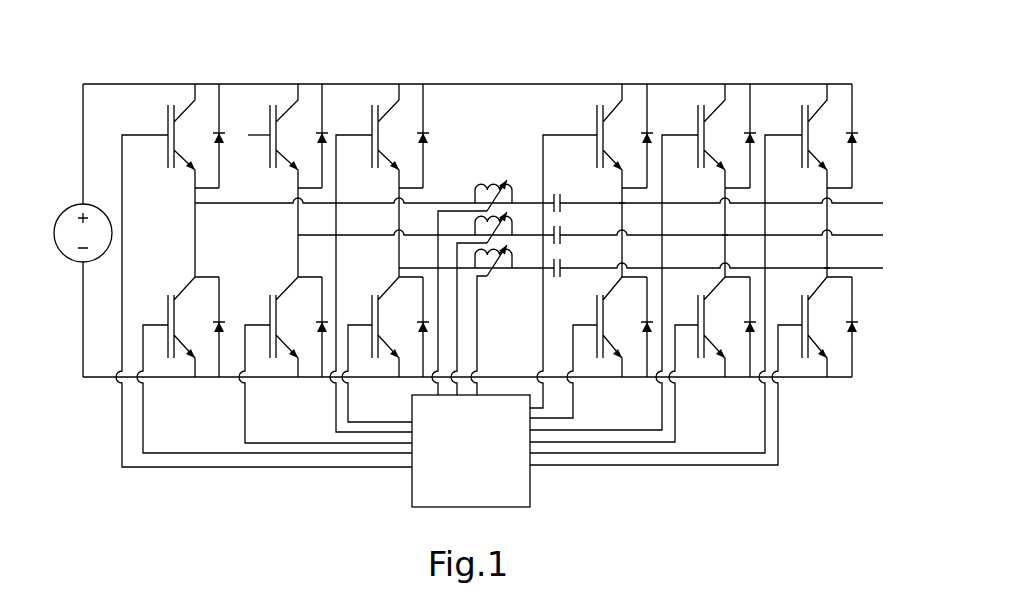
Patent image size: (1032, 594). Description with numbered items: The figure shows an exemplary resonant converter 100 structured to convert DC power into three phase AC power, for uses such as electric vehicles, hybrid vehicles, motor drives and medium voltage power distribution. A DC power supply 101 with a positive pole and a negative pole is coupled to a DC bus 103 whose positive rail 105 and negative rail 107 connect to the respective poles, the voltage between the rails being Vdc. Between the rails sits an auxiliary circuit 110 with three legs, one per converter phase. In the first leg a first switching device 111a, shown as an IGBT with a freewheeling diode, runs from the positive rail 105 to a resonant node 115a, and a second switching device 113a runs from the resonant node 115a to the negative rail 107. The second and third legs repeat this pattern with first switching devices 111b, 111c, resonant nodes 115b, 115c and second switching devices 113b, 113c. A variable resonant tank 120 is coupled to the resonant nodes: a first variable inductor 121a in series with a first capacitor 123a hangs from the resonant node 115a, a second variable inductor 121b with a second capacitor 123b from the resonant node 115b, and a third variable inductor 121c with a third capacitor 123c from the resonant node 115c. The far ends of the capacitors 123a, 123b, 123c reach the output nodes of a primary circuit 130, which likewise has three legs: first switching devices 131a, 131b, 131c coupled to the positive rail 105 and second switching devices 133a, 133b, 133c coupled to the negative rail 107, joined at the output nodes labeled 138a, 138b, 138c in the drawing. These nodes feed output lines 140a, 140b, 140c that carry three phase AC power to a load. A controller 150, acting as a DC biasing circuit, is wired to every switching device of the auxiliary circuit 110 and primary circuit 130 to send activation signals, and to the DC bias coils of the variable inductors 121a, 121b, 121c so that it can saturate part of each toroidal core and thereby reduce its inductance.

The resonant converter 100 is at (150, 473).
The DC power supply 101 is at (56, 248).
The DC bus 103 is at (95, 60).
The positive rail 105 is at (140, 84).
The negative rail 107 is at (100, 377).
The auxiliary circuit 110 is at (268, 475).
The first switching device 111a is at (166, 104).
The first switching device 111b is at (268, 104).
The first switching device 111c is at (370, 104).
The second switching device 113a is at (166, 360).
The second switching device 113b is at (268, 360).
The second switching device 113c is at (370, 360).
The resonant node 115a is at (195, 203).
The resonant node 115b is at (298, 235).
The resonant node 115c is at (399, 268).
The variable resonant tank 120 is at (494, 110).
The first variable inductor 121a is at (475, 190).
The second variable inductor 121b is at (475, 224).
The third variable inductor 121c is at (512, 270).
The first capacitor 123a is at (560, 206).
The second capacitor 123b is at (560, 238).
The third capacitor 123c is at (560, 271).
The primary circuit 130 is at (648, 475).
The first switching device 131a is at (595, 104).
The first switching device 131b is at (696, 104).
The first switching device 131c is at (800, 104).
The second switching device 133a is at (595, 360).
The second switching device 133b is at (696, 360).
The second switching device 133c is at (800, 360).
The phase node a 138a is at (624, 206).
The phase node b 138b is at (727, 238).
The phase node c 138c is at (829, 238).
The output line 140a is at (883, 203).
The output line 140b is at (883, 235).
The output line 140c is at (883, 268).
The controller 150 is at (471, 451).